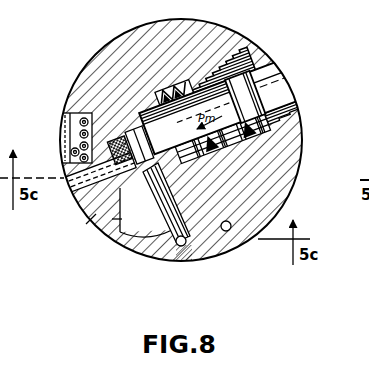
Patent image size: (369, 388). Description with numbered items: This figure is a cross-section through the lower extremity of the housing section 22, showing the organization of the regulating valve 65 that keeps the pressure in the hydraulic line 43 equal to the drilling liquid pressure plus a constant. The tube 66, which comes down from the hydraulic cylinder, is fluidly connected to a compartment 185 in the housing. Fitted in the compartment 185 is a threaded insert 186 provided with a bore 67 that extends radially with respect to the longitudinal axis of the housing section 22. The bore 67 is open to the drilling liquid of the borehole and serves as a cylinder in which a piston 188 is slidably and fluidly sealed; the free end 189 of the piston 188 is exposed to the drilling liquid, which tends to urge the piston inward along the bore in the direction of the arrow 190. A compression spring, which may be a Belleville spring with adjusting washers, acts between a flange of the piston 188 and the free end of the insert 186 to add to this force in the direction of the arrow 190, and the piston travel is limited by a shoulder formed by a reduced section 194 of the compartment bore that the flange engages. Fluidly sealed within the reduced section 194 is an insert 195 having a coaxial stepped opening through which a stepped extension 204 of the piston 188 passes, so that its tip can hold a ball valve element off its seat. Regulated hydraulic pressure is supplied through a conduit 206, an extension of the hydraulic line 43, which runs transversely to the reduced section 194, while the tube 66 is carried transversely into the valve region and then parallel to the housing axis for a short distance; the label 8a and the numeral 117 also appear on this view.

The housing section 22 is at (258, 52).
The bore 67 is at (282, 72).
The free end 189 is at (278, 90).
The threaded insert 186 is at (290, 132).
The piston 188 is at (200, 78).
The reduced section 194 is at (170, 90).
The insert 195 is at (137, 132).
The extension 204 is at (118, 146).
The arrow 190 is at (247, 96).
The compartment 185 is at (222, 157).
The conduit 206 is at (155, 202).
The tube 66 is at (67, 192).
The passage 8a is at (89, 224).
The regulating valve 65 is at (117, 221).
The hydraulic line 43 is at (181, 247).
The hole 117 is at (229, 232).